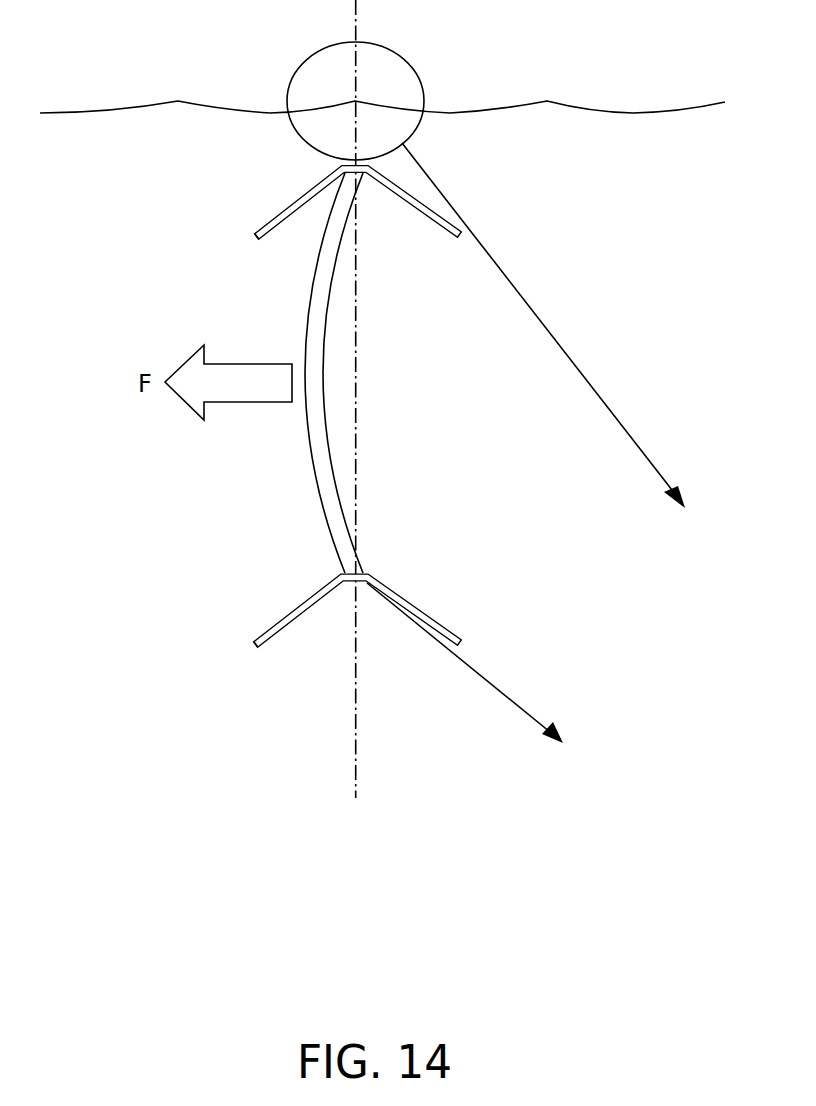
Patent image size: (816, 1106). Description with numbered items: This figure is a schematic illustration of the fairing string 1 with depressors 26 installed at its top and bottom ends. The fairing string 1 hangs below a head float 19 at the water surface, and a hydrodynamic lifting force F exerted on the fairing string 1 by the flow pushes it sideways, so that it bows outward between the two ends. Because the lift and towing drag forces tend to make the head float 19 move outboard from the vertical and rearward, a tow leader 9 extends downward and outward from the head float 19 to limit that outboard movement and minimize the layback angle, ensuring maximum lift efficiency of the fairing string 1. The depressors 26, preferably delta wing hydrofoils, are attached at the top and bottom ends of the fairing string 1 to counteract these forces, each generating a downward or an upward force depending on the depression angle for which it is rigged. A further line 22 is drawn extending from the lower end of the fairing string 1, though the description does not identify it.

The fairing string 1 is at (336, 437).
The tow leader 9 is at (573, 353).
The head float 19 is at (415, 60).
The tether cable 22 is at (499, 680).
The depressor 26 is at (266, 209).